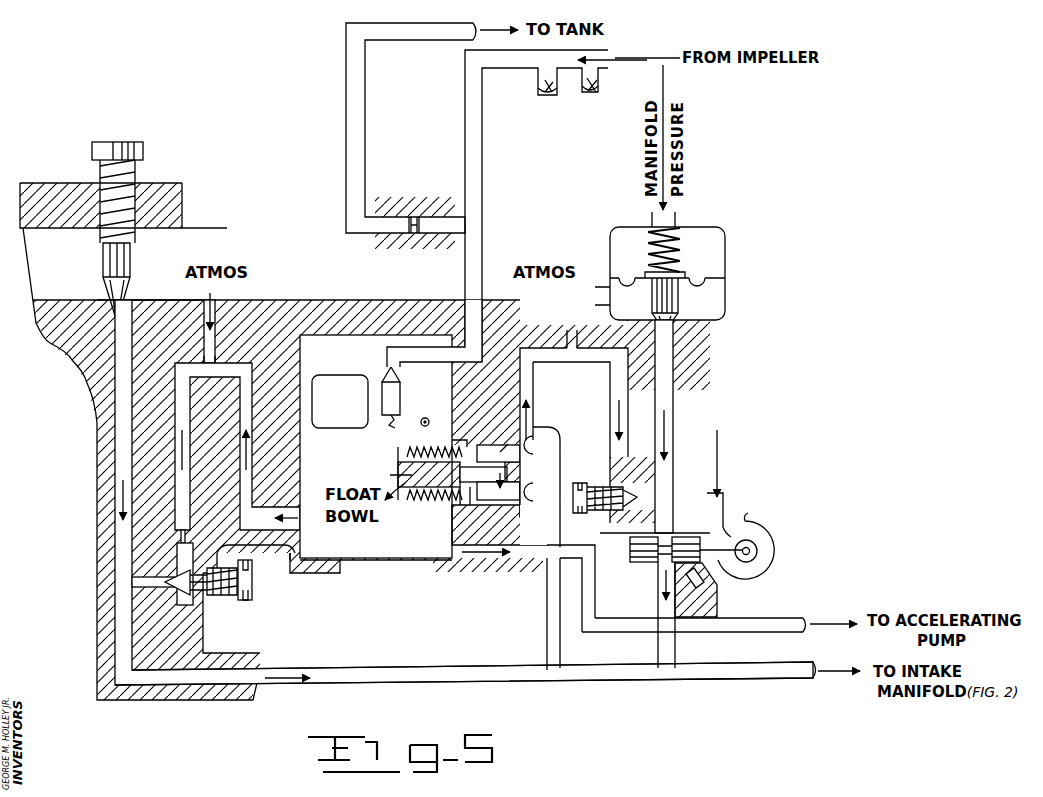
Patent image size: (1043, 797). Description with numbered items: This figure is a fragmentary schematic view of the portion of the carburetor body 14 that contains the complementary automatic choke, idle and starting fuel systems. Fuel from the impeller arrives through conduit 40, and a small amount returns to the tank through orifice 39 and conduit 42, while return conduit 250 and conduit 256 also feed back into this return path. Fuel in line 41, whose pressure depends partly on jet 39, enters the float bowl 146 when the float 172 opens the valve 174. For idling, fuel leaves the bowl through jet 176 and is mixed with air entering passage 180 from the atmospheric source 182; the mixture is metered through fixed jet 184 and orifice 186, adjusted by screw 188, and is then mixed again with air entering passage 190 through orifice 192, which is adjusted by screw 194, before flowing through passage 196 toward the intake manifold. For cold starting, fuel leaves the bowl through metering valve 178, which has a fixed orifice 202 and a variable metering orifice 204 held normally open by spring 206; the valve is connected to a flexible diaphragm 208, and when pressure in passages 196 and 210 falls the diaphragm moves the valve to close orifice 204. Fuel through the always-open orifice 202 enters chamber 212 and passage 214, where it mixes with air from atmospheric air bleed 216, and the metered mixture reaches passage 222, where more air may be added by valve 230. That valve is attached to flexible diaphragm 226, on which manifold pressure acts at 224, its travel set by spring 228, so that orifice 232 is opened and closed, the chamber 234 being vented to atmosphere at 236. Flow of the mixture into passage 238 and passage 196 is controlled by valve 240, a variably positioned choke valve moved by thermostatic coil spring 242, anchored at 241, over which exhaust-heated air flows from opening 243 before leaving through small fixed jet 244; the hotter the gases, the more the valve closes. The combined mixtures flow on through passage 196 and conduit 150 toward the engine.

The carburetor body 14 is at (368, 570).
The orifice 39 is at (411, 217).
The conduit 40 is at (530, 58).
The line 41 is at (466, 306).
The conduit 42 is at (420, 33).
The float bowl 146 is at (310, 458).
The conduit to accelerating pump 150 is at (777, 623).
The float 172 is at (343, 382).
The valve 174 is at (401, 378).
The jet 176 is at (293, 522).
The metering valve 178 is at (427, 500).
The passage 180 is at (217, 333).
The air source 182 is at (194, 321).
The fixed jet 184 is at (188, 535).
The orifice 186 is at (173, 588).
The screw 188 is at (227, 598).
The passage 190 is at (120, 444).
The orifice 192 is at (110, 317).
The screw 194 is at (110, 267).
The passage 196 is at (183, 680).
The fixed orifice 202 is at (480, 470).
The variable metering orifice 204 is at (480, 510).
The spring 206 is at (430, 465).
The flexible diaphragm 208 is at (550, 430).
The passage 210 is at (553, 578).
The chamber 212 is at (528, 492).
The passage 214 is at (523, 360).
The atmospheric air bleed 216 is at (575, 348).
The passage 222 is at (668, 388).
The manifold pressure connection 224 is at (673, 210).
The flexible diaphragm 226 is at (690, 283).
The spring 228 is at (684, 243).
The valve 230 is at (679, 305).
The orifice 232 is at (669, 328).
The chamber 234 is at (712, 294).
The atmospheric vent 236 is at (597, 294).
The passage 238 is at (659, 612).
The valve 240 is at (642, 556).
The anchor 241 is at (748, 551).
The thermostatic coil spring 242 is at (742, 524).
The opening 243 is at (719, 508).
The small fixed jet 244 is at (694, 580).
The return conduit 250 is at (593, 92).
The conduit 256 is at (547, 95).